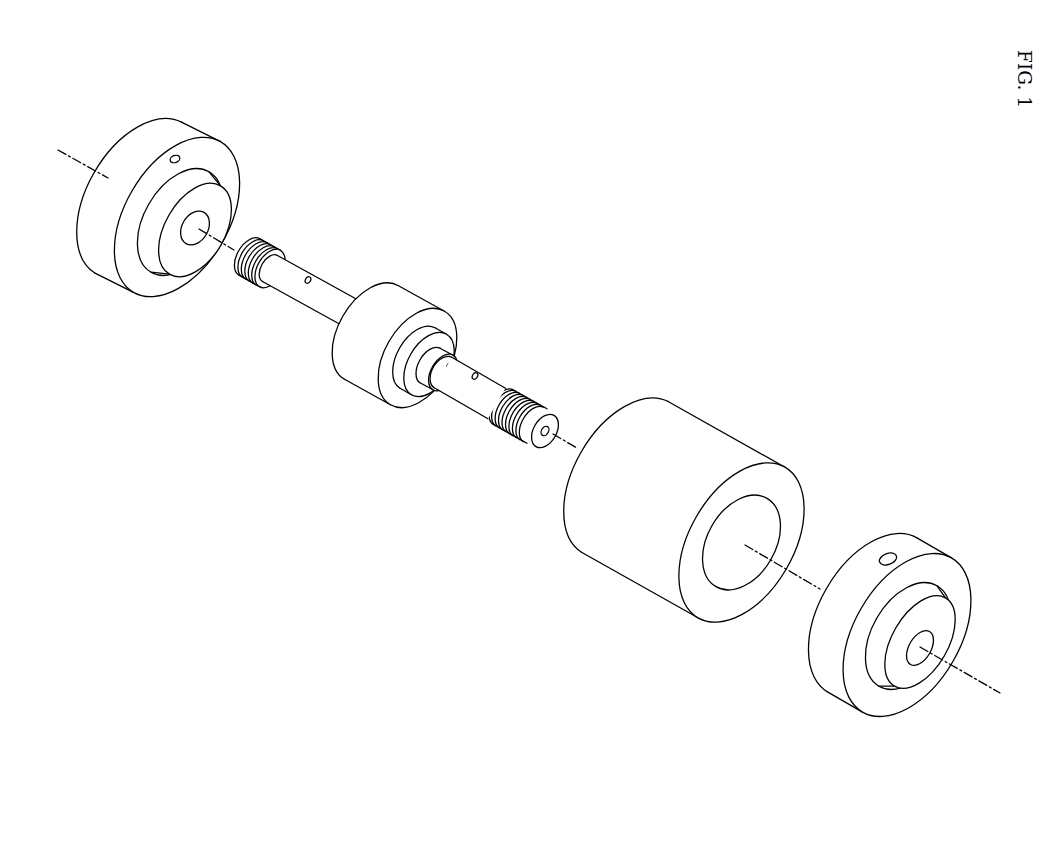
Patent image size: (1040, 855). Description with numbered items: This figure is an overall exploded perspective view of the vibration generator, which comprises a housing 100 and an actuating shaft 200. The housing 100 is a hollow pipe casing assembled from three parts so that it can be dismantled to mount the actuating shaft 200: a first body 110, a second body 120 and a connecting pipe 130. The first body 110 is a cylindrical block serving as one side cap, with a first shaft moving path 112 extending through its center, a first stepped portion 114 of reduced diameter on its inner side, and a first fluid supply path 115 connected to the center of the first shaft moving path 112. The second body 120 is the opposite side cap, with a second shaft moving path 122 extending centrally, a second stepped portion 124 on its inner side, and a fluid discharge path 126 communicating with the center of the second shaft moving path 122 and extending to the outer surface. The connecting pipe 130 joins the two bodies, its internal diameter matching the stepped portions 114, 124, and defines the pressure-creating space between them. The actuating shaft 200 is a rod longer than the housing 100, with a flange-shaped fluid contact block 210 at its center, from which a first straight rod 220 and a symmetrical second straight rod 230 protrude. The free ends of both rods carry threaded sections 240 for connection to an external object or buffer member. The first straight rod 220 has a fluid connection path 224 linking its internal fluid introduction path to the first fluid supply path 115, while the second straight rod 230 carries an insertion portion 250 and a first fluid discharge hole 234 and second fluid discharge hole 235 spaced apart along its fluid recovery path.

The housing 100 is at (529, 427).
The first body 110 is at (199, 232).
The first shaft moving path 112 is at (209, 227).
The first stepped portion 114 is at (152, 293).
The first fluid supply path 115 is at (181, 159).
The second body 120 is at (876, 598).
The second shaft moving path 122 is at (920, 666).
The second stepped portion 124 is at (808, 617).
The fluid discharge path 126 is at (898, 554).
The connecting pipe 130 is at (713, 448).
The actuating shaft 200 is at (403, 344).
The fluid contact block 210 is at (412, 302).
The first straight rod 220 is at (403, 344).
The fluid connection path 224 is at (300, 282).
The second straight rod 230 is at (495, 388).
The first fluid discharge hole 234 is at (450, 369).
The second fluid discharge hole 235 is at (477, 382).
The threaded section 240 is at (238, 283).
The insertion portion 250 is at (403, 407).